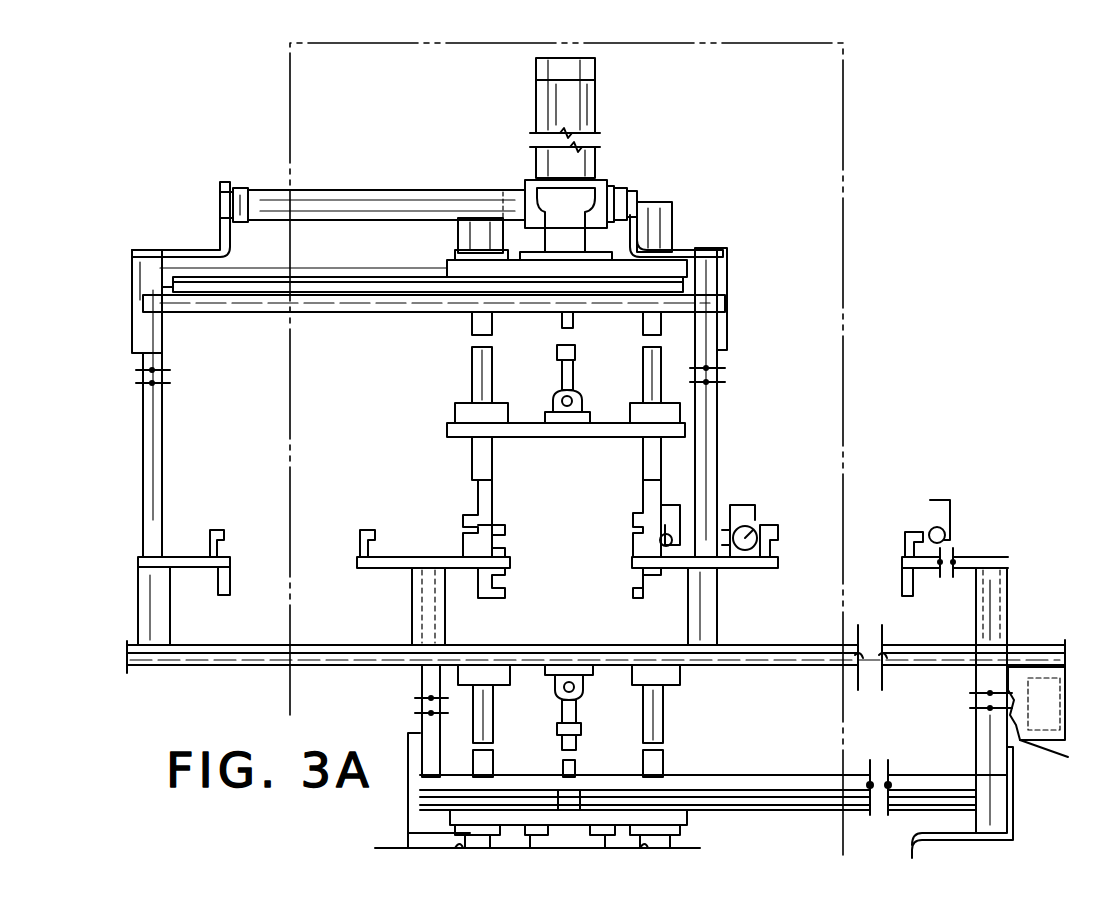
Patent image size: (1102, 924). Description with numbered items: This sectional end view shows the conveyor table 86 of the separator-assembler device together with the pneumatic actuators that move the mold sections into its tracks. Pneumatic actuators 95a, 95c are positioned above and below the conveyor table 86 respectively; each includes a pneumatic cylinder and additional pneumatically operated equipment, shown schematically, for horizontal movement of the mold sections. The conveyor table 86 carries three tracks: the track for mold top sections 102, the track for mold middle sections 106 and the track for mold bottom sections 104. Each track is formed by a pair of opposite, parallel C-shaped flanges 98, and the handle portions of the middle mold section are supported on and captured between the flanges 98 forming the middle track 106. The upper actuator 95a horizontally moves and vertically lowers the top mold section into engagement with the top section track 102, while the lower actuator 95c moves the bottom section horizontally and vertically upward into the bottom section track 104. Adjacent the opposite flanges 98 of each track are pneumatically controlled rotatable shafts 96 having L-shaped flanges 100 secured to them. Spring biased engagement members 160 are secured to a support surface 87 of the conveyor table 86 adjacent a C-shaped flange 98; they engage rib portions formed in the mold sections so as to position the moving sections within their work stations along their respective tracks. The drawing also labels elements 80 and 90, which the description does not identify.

The frame 80 is at (992, 815).
The conveyor table 86 is at (243, 656).
The support surface 87 is at (187, 557).
The gripper tooling assembly 90 is at (602, 540).
The pneumatic actuator 95a is at (617, 148).
The pneumatic actuator 95c is at (560, 851).
The rotatable shaft 96 is at (745, 538).
The C-shaped flange 98 is at (215, 530).
The L-shaped flange 100 is at (950, 500).
The top mold section track 102 is at (332, 578).
The bottom mold section track 104 is at (815, 595).
The middle mold section track 106 is at (595, 598).
The engagement member 160 is at (230, 585).